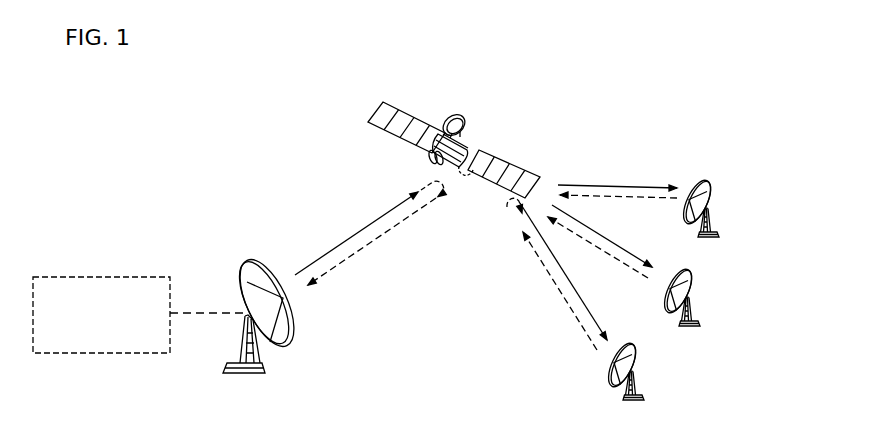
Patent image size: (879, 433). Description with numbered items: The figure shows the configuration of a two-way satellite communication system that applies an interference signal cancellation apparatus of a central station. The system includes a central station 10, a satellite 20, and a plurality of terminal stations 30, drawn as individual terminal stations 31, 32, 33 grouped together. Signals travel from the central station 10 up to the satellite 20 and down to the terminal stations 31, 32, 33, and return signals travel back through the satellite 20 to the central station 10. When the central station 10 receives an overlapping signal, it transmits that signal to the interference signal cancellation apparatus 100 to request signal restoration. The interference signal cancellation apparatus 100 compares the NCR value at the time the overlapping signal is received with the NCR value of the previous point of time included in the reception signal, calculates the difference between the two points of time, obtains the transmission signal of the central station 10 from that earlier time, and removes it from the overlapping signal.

The central station 10 is at (249, 238).
The satellite 20 is at (458, 116).
The plurality of terminal stations 30 is at (720, 288).
The terminal station 31 is at (635, 377).
The terminal station 32 is at (690, 293).
The terminal station 33 is at (717, 234).
The interference signal cancellation apparatus 100 is at (152, 277).